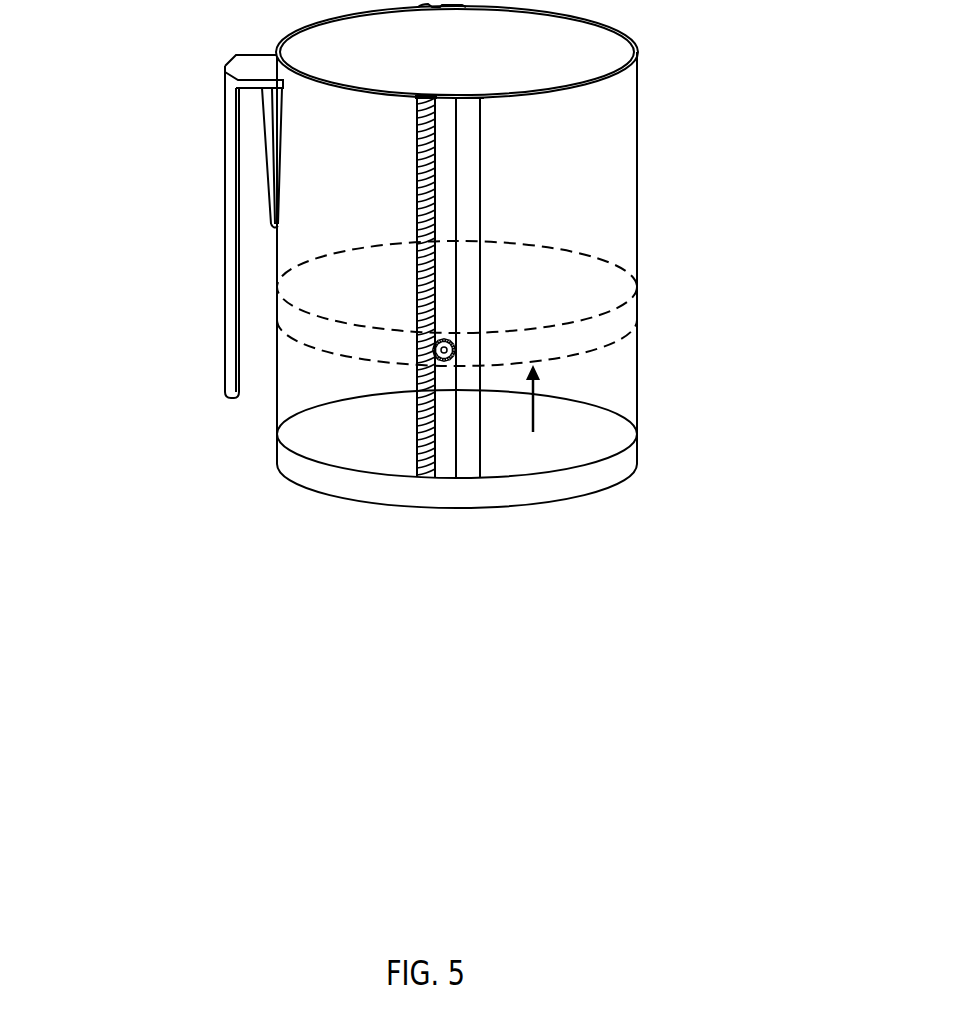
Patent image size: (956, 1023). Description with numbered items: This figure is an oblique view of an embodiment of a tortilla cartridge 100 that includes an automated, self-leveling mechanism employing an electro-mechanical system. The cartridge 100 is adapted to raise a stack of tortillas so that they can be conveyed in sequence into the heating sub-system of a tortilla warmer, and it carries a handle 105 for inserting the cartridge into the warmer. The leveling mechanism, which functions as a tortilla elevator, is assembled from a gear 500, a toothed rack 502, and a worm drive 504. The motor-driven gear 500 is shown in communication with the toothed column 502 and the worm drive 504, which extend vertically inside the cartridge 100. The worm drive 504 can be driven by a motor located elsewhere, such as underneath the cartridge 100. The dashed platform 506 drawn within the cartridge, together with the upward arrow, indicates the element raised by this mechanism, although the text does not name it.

The tortilla cartridge 100 is at (665, 208).
The handle 105 is at (233, 222).
The gear 500 is at (443, 326).
The toothed rack 502 is at (482, 185).
The worm drive 504 is at (415, 150).
The movable plate / plunger 506 is at (612, 352).